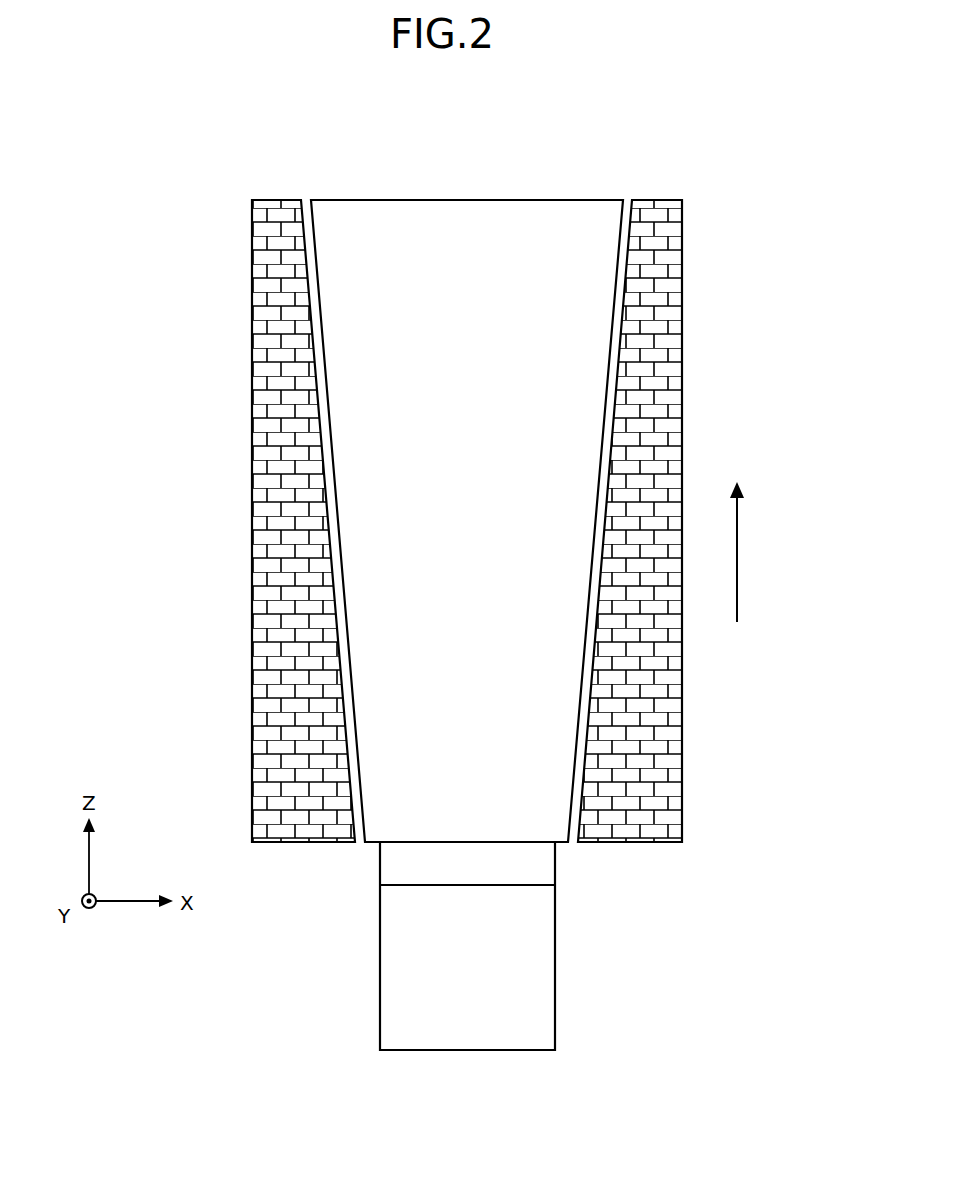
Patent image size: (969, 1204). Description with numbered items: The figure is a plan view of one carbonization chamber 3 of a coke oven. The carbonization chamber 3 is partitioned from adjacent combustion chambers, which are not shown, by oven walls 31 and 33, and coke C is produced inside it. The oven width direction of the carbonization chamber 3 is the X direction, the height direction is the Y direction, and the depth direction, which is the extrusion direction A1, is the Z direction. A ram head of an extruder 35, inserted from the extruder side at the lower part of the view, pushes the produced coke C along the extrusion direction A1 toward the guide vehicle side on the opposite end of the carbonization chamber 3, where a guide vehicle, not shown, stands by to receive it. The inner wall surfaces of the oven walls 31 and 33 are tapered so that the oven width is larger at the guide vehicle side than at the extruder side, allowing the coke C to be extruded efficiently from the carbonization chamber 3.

The carbonization chamber 3 is at (612, 158).
The oven wall 31 is at (263, 425).
The oven wall 33 is at (670, 415).
The extruder 35 is at (408, 977).
The coke C is at (575, 370).
The extrusion direction A1 is at (738, 558).